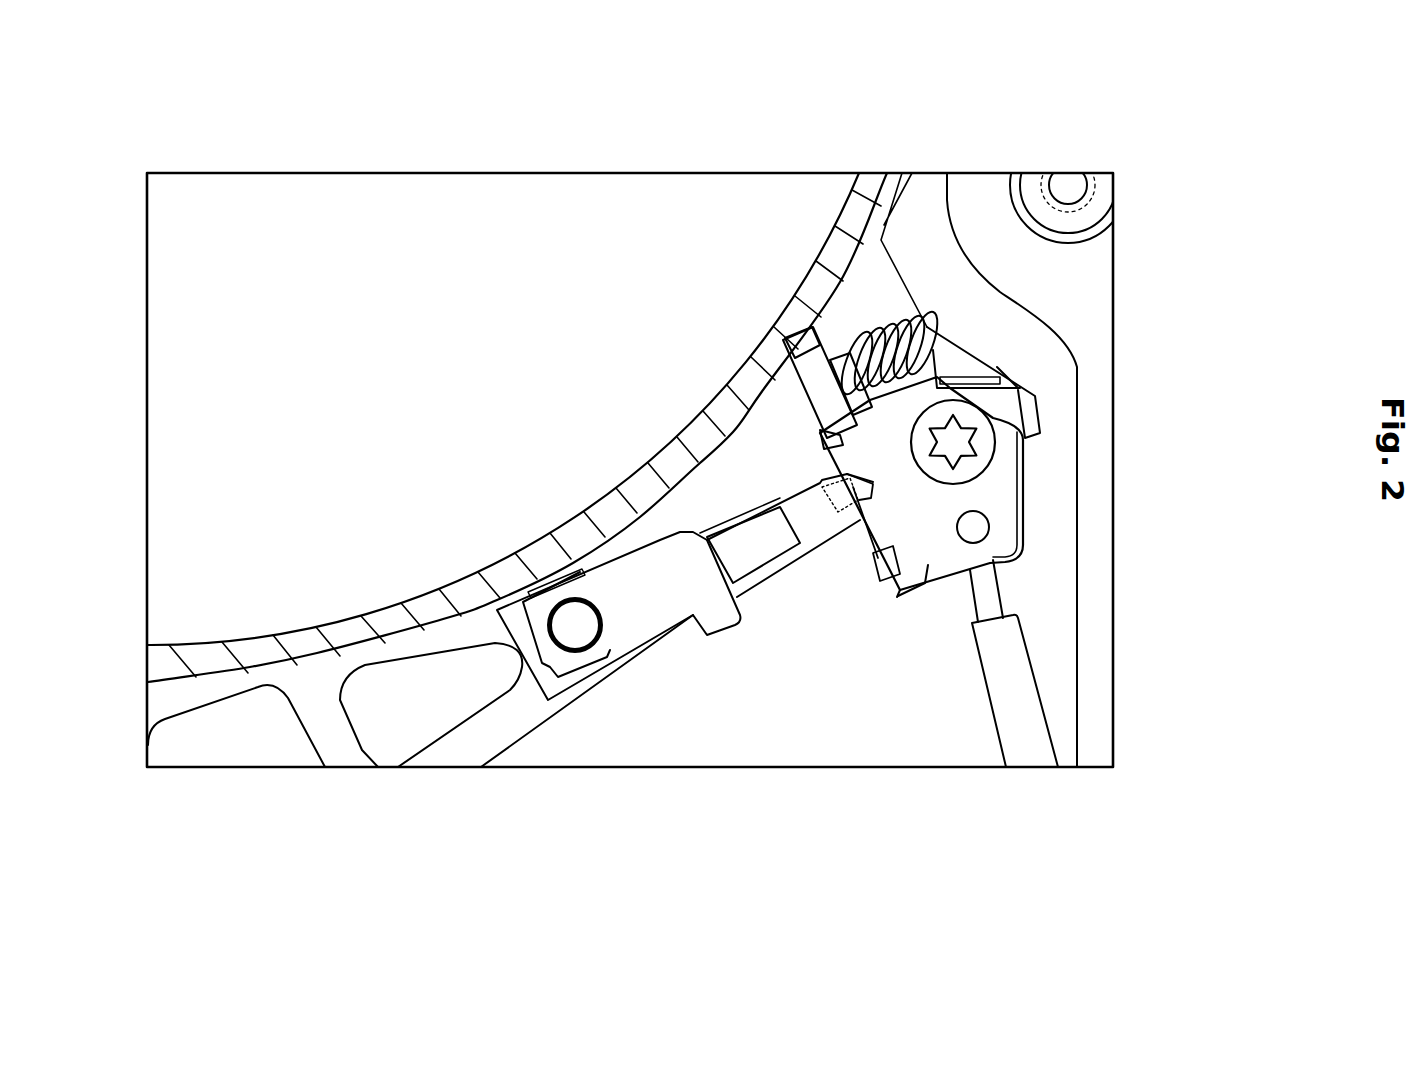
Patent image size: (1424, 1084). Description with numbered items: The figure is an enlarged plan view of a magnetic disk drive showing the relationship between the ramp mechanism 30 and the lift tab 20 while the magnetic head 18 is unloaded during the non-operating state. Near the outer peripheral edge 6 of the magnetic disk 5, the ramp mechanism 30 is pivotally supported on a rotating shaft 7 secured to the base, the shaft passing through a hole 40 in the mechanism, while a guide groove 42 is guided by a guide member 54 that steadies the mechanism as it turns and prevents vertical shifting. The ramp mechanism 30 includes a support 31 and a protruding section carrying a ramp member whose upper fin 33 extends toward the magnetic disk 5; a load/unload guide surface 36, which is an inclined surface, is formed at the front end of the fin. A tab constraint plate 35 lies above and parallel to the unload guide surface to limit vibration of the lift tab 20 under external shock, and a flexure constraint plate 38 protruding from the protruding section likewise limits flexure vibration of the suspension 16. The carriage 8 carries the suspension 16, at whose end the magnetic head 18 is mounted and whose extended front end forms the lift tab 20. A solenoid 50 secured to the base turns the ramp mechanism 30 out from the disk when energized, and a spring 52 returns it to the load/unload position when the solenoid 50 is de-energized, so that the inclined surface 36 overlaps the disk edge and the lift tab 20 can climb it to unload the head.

The magnetic disk 5 is at (410, 197).
The outer peripheral edge 6 is at (863, 222).
The rotating shaft 7 is at (990, 567).
The carriage 8 is at (165, 702).
The suspension 16 is at (807, 517).
The magnetic head 18 is at (827, 495).
The lift tab 20 is at (870, 492).
The ramp mechanism 30 is at (1017, 397).
The support 31 is at (928, 565).
The upper fin 33 is at (850, 336).
The tab constraint plate 35 is at (893, 573).
The load/unload guide surface 36 is at (795, 332).
The flexure constraint plate 38 is at (823, 430).
The hole 40 is at (973, 527).
The guide groove 42 is at (1008, 458).
The driving element (solenoid) 50 is at (1020, 733).
The spring 52 is at (913, 332).
The guide member 54 is at (957, 437).